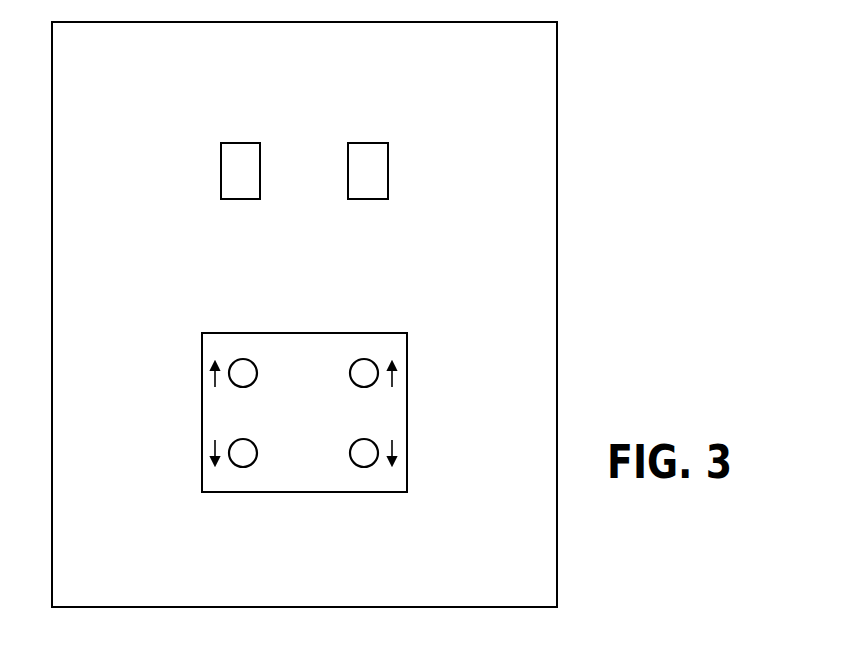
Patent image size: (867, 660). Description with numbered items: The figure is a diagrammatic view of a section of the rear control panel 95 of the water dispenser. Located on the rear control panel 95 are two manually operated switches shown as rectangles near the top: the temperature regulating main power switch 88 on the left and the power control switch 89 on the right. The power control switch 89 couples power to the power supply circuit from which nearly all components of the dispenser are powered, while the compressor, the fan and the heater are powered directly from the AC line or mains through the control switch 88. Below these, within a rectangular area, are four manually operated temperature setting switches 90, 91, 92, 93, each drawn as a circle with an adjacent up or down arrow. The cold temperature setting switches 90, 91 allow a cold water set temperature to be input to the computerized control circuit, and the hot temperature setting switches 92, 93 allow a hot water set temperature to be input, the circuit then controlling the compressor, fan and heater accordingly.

The temperature regulating main power switch 88 is at (221, 167).
The power control switch 89 is at (388, 165).
The cold temperature setting switch 90 is at (250, 360).
The cold temperature setting switch 91 is at (242, 467).
The hot temperature setting switch 92 is at (354, 360).
The hot temperature setting switch 93 is at (364, 467).
The rear control panel 95 is at (535, 162).